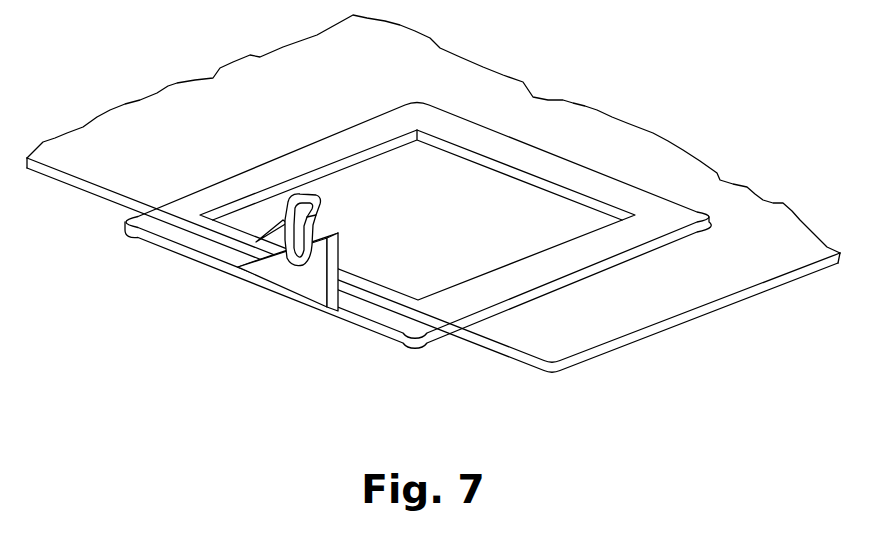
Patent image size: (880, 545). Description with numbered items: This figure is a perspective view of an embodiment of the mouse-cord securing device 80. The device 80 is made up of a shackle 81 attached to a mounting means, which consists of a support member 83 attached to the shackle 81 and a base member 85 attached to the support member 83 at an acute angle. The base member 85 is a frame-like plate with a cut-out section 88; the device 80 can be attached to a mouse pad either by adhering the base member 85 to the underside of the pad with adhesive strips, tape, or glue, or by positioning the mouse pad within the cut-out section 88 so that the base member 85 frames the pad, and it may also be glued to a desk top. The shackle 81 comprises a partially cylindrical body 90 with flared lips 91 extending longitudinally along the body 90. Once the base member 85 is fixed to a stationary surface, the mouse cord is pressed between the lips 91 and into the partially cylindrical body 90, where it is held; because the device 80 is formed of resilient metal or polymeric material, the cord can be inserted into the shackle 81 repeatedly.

The device 80 is at (571, 98).
The base member 85 is at (588, 166).
The cut-out section 88 is at (474, 232).
The support member 83 is at (310, 288).
The flared lips 91 is at (281, 223).
The shackle 81 is at (323, 199).
The partially cylindrical body 90 is at (322, 219).